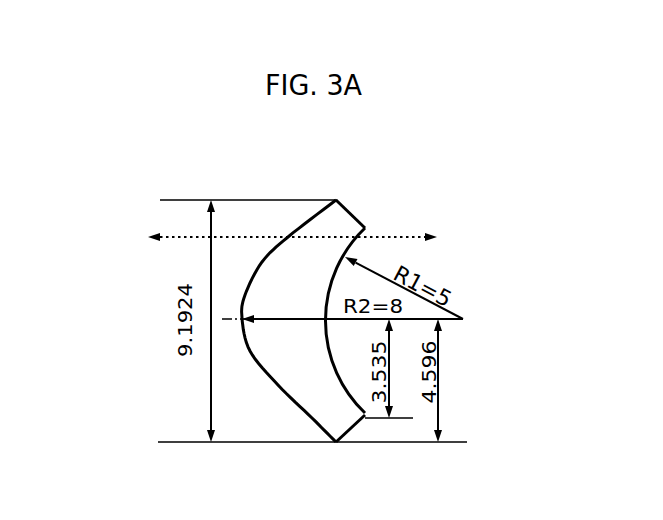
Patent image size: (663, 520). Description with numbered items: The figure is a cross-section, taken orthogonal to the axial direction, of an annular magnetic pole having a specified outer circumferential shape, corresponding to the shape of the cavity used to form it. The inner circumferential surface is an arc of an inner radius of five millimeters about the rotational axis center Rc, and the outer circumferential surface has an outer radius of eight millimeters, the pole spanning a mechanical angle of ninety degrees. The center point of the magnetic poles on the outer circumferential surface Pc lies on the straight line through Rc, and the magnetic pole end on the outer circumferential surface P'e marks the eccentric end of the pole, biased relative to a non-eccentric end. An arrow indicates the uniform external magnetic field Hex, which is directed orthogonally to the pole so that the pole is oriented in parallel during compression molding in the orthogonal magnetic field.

The center point of the magnetic poles on the outer circumferential surface Pc is at (223, 321).
The magnetic pole end on the outer circumferential surface P'e is at (375, 186).
The rotational axis center Rc is at (463, 283).
The uniform external magnetic field Hex is at (261, 228).